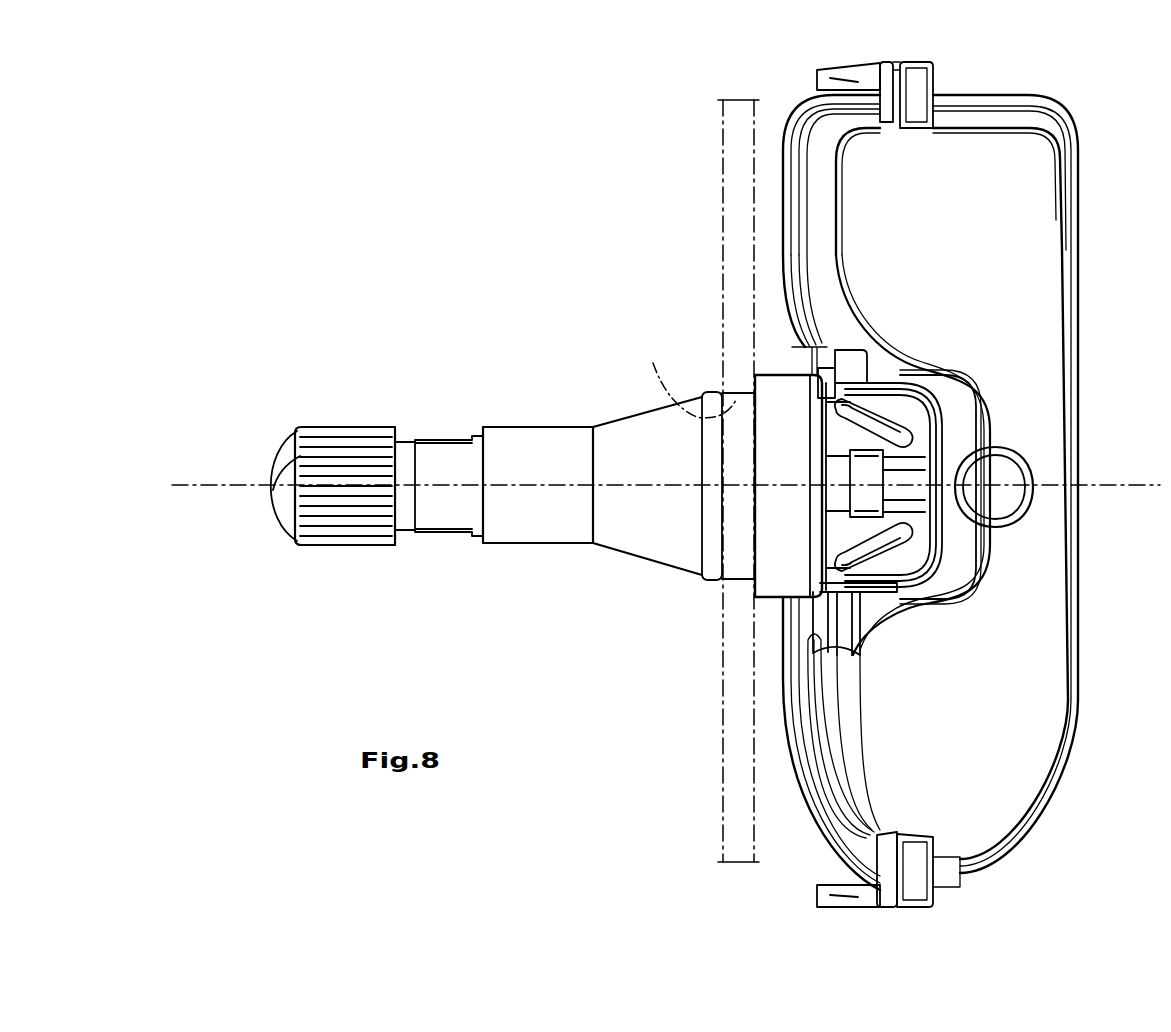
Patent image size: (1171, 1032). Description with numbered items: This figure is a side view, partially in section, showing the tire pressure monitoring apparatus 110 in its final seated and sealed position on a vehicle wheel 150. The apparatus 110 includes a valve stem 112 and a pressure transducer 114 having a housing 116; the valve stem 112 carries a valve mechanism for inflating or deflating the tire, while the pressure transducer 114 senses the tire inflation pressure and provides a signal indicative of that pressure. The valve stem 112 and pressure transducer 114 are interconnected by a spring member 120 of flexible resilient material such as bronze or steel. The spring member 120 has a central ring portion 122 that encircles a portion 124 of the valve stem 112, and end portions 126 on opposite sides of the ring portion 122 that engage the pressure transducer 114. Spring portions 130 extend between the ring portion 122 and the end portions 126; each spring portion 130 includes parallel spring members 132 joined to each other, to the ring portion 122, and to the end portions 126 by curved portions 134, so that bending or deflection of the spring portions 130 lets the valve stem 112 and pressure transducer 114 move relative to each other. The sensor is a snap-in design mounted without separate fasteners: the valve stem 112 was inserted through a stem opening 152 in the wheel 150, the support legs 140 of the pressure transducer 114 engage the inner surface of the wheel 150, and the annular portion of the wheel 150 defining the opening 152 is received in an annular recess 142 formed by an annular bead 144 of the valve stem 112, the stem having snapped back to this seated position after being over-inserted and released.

The tire pressure monitoring apparatus 110 is at (553, 262).
The valve stem 112 is at (539, 458).
The pressure transducer 114 is at (1040, 265).
The housing 116 is at (1053, 433).
The spring member 120 is at (923, 393).
The central ring portion 122 is at (835, 540).
The portion of the valve stem 124 is at (957, 437).
The end portions 126 is at (212, 480).
The spring portions 130 is at (903, 390).
The parallel spring members 132 is at (900, 387).
The curved portions 134 is at (977, 400).
The support legs 140 is at (828, 71).
The annular recess 142 is at (738, 563).
The annular bead 144 is at (713, 550).
The vehicle wheel 150 is at (735, 210).
The stem opening 152 is at (683, 377).